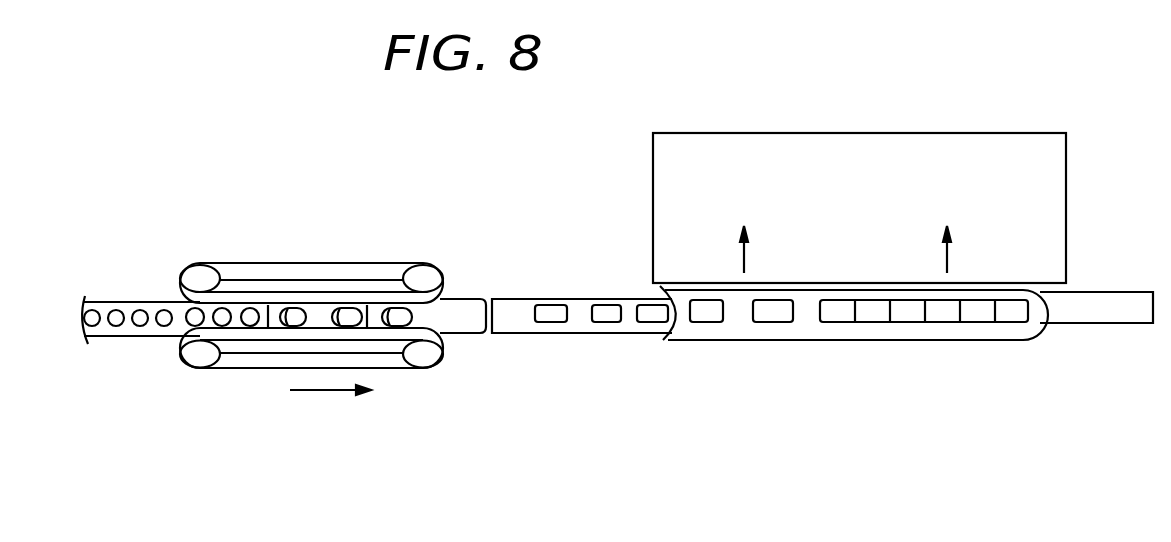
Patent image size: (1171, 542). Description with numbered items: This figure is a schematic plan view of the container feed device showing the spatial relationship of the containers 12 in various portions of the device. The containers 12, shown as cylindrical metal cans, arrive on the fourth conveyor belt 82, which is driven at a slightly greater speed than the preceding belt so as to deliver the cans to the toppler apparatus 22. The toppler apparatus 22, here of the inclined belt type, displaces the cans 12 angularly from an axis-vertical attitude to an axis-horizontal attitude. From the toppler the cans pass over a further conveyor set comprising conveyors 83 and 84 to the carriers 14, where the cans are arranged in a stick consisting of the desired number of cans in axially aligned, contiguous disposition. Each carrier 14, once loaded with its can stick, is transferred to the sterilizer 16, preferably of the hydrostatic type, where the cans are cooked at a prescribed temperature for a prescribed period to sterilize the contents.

The containers 12 is at (163, 303).
The carriers 14 is at (998, 341).
The sterilizer 16 is at (1067, 172).
The toppler apparatus 22 is at (300, 266).
The fourth conveyor belt 82 is at (125, 330).
The conveyor 83 is at (460, 308).
The conveyor 84 is at (521, 326).